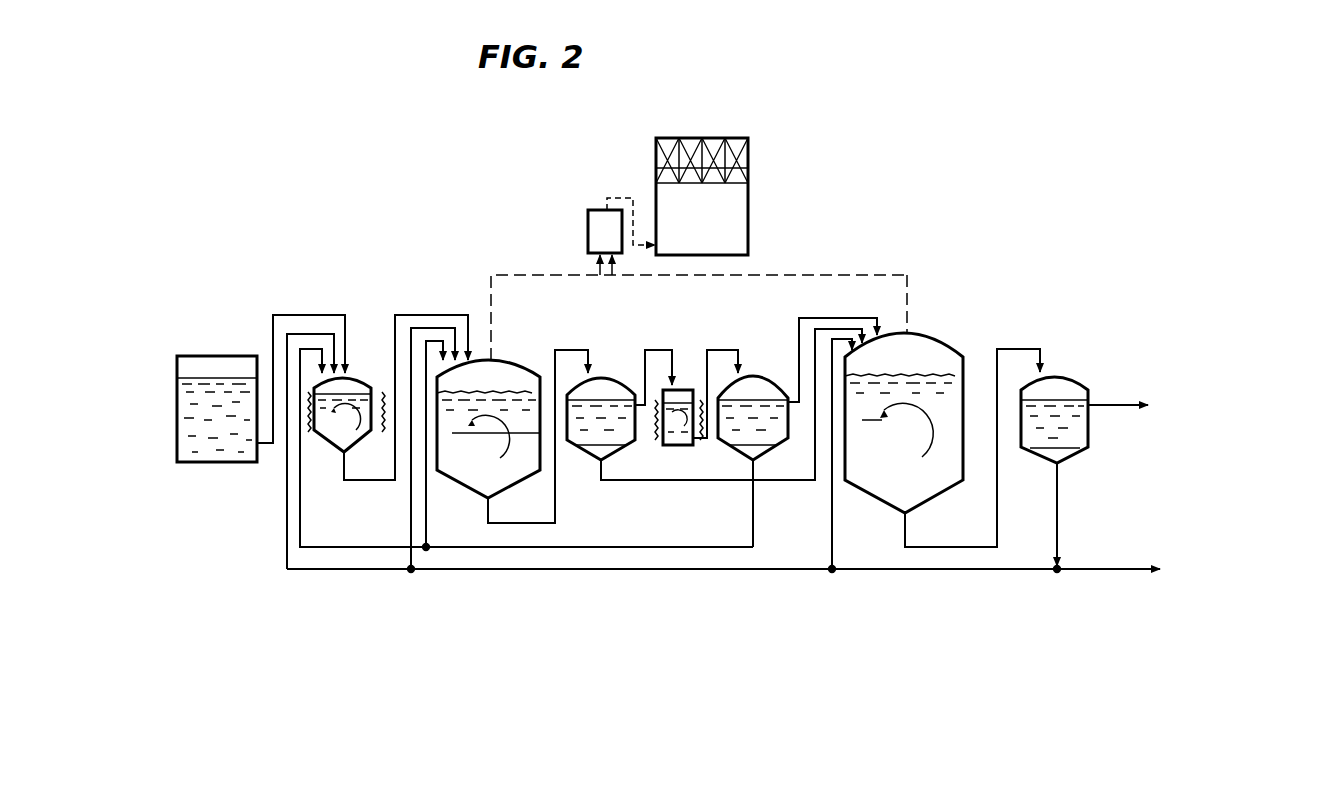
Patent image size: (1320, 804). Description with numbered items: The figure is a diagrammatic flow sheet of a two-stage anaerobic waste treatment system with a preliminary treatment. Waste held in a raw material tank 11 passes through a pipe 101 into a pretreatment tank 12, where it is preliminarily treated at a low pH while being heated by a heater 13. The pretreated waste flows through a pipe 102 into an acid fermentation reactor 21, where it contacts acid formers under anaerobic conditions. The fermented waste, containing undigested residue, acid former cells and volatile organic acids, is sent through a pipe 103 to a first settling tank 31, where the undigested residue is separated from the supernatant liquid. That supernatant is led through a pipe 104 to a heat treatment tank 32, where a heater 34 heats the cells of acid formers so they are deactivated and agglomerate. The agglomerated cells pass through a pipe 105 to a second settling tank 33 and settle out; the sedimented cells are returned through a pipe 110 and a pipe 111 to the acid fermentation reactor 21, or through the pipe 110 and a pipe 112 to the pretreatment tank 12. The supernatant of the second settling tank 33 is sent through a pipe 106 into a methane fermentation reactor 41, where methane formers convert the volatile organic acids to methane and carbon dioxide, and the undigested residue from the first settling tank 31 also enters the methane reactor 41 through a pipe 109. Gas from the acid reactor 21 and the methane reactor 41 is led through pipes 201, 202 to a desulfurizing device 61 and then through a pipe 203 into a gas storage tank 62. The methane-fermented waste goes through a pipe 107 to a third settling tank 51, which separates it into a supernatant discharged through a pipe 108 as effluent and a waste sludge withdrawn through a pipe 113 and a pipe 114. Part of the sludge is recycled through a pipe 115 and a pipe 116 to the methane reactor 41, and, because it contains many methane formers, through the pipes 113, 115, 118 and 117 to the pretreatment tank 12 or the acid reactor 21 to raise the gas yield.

The raw material tank 11 is at (205, 356).
The pretreatment tank 12 is at (372, 387).
The heater 13 is at (309, 433).
The acid fermentation reactor 21 is at (500, 362).
The first settling tank 31 is at (598, 379).
The heat treatment tank 32 is at (683, 447).
The second settling tank 33 is at (777, 378).
The heater 34 is at (656, 441).
The methane fermentation reactor 41 is at (935, 343).
The third settling tank 51 is at (1062, 380).
The desulfurizing device 61 is at (588, 220).
The gas storage tank 62 is at (748, 201).
The pipe 101 is at (303, 315).
The pipe 102 is at (430, 315).
The pipe 103 is at (557, 518).
The pipe 104 is at (667, 350).
The pipe 105 is at (710, 350).
The pipe 106 is at (800, 318).
The pipe 107 is at (997, 525).
The pipe 108 is at (1121, 404).
The pipe 109 is at (728, 483).
The pipe 110 is at (753, 522).
The pipe 111 is at (426, 518).
The pipe 112 is at (300, 508).
The pipe 113 is at (1060, 497).
The pipe 114 is at (1085, 569).
The pipe 115 is at (900, 572).
The pipe 116 is at (832, 547).
The pipe 117 is at (411, 528).
The pipe 118 is at (287, 530).
The pipe 201 is at (491, 275).
The pipe 202 is at (912, 288).
The pipe 203 is at (620, 198).